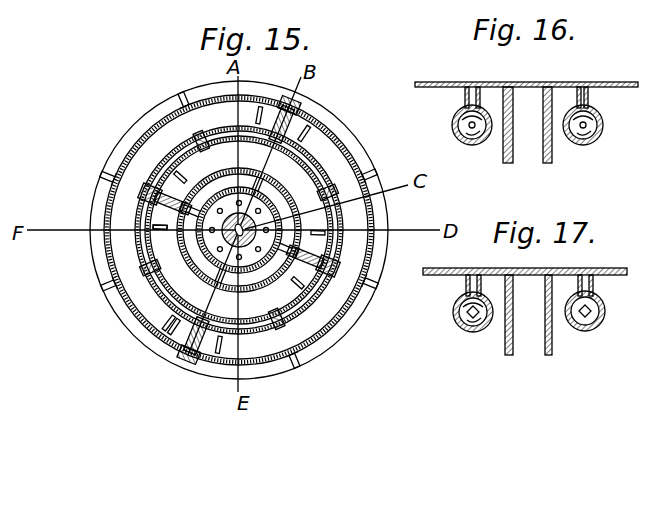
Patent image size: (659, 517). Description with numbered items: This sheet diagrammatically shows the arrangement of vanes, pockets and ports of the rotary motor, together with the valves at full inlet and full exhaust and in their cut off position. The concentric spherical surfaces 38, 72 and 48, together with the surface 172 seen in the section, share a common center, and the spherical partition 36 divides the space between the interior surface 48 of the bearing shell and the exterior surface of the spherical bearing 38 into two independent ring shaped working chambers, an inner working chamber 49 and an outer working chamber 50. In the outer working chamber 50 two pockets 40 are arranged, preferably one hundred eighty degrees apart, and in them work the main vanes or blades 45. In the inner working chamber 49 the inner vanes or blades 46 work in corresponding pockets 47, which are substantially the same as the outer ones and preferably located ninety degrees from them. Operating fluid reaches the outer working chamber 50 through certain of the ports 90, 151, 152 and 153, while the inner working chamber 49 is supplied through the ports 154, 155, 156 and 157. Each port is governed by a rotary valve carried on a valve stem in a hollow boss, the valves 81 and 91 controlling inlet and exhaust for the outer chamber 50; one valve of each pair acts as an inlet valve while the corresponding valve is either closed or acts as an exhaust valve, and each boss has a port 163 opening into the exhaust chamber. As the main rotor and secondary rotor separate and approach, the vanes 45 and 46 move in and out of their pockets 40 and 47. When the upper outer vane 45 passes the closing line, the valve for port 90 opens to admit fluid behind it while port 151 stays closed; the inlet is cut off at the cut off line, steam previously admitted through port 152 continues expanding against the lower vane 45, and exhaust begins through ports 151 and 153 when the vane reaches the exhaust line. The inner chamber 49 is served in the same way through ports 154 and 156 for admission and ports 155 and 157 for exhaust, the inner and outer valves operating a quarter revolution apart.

In FIG. 15, the spherical partition 36 is at (226, 283).
In FIG. 15, the spherical bearing 38 is at (252, 284).
In FIG. 15, the pocket 40 is at (312, 103).
In FIG. 16, the pocket 40 is at (555, 108).
In FIG. 17, the pocket 40 is at (528, 314).
In FIG. 15, the main vane or blade 45 is at (178, 337).
In FIG. 15, the inner vane or blade 46 is at (150, 173).
In FIG. 15, the inner pocket 47 is at (140, 193).
In FIG. 15, the interior surface of spherical bearing shell 48 is at (162, 286).
In FIG. 15, the inner working chamber 49 is at (239, 230).
In FIG. 15, the outer working chamber 50 is at (100, 250).
In FIG. 16, the outer working chamber 50 is at (583, 79).
In FIG. 17, the outer working chamber 50 is at (567, 297).
In FIG. 15, the spherical surface 72 is at (148, 262).
In FIG. 16, the rotary valve 81 is at (462, 138).
In FIG. 17, the rotary valve 81 is at (455, 312).
In FIG. 15, the port 90 is at (262, 105).
In FIG. 16, the port 90 is at (473, 80).
In FIG. 17, the port 90 is at (472, 275).
In FIG. 16, the rotary valve 91 is at (598, 132).
In FIG. 17, the rotary valve 91 is at (604, 308).
In FIG. 15, the port 151 is at (306, 132).
In FIG. 16, the port 151 is at (587, 88).
In FIG. 17, the port 151 is at (586, 275).
In FIG. 15, the port 152 is at (214, 352).
In FIG. 15, the port 153 is at (160, 321).
In FIG. 15, the port 154 is at (375, 229).
In FIG. 15, the port 155 is at (298, 293).
In FIG. 15, the port 156 is at (106, 221).
In FIG. 15, the port 157 is at (190, 135).
In FIG. 16, the exhaust port 163 is at (480, 107).
In FIG. 17, the exhaust port 163 is at (487, 300).
In FIG. 15, the slot 172 is at (163, 242).